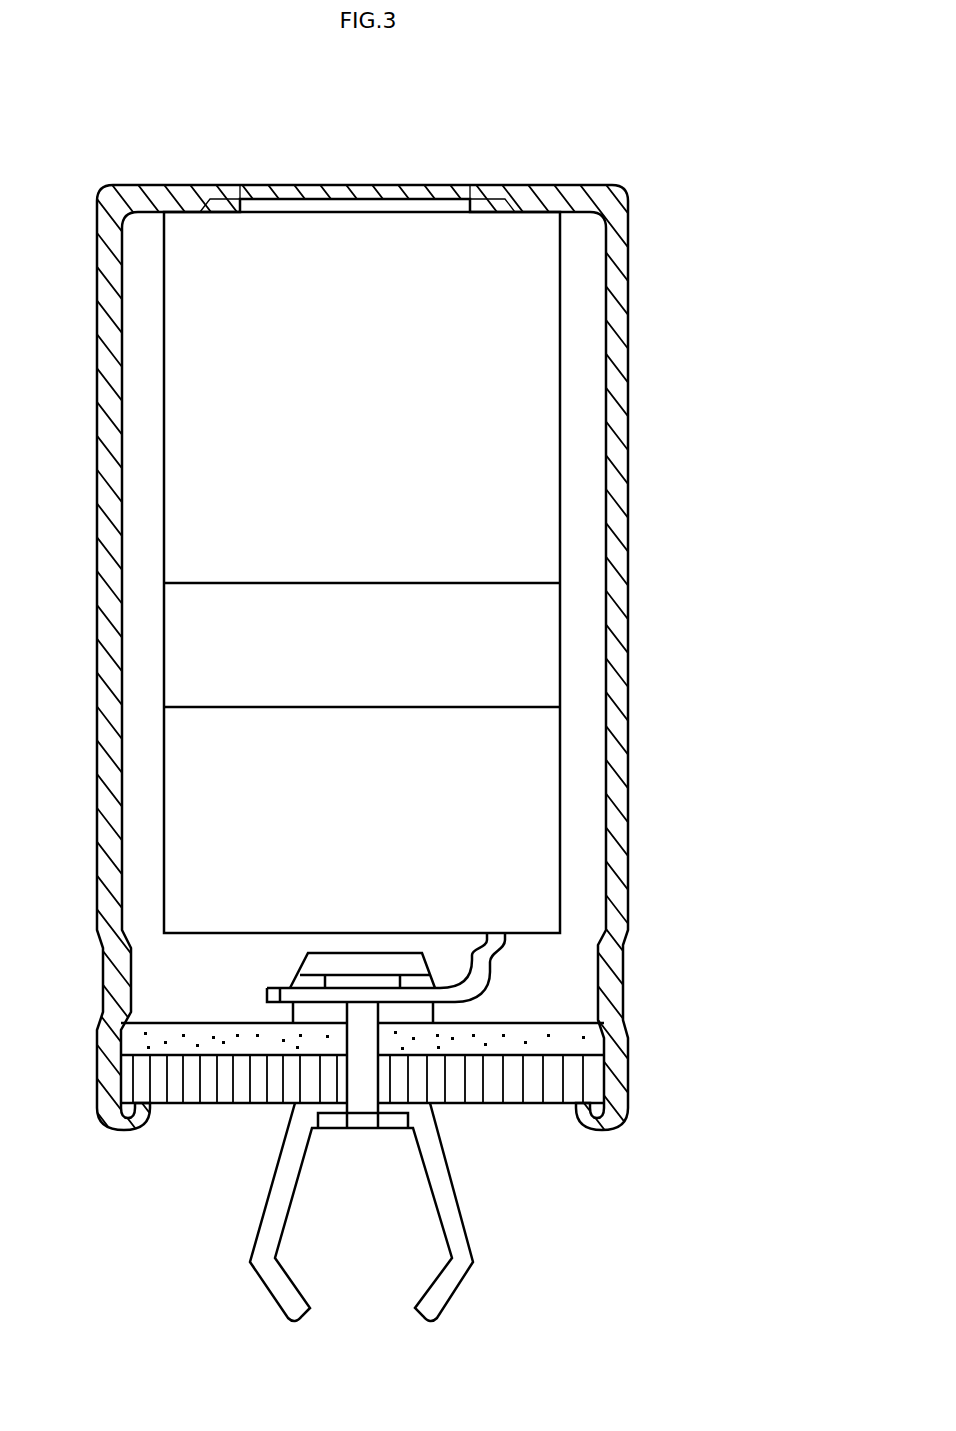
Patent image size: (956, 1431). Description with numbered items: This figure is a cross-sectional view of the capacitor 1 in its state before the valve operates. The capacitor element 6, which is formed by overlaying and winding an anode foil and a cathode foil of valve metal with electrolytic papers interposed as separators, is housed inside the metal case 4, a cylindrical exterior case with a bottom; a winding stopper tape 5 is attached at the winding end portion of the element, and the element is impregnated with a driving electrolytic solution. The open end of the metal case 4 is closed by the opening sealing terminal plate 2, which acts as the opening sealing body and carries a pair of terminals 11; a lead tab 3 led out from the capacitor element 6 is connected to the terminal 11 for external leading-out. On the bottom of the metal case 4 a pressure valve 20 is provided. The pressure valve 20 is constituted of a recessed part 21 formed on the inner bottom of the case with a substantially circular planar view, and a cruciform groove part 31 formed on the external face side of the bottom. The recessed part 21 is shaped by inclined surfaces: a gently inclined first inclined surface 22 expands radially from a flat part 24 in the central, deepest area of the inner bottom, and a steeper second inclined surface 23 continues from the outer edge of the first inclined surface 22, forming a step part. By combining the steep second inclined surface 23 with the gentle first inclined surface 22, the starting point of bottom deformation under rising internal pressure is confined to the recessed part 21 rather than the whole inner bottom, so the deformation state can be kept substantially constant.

The capacitor 1 is at (732, 172).
The opening sealing terminal plate 2 is at (223, 1086).
The lead tab 3 is at (483, 968).
The metal case 4 is at (618, 485).
The winding stopper tape 5 is at (503, 633).
The capacitor element 6 is at (437, 572).
The terminal 11 is at (478, 1240).
The pressure valve 20 is at (350, 220).
The recessed part 21 is at (336, 218).
The first inclined surface 22 is at (253, 200).
The second inclined surface 23 is at (207, 200).
The flat part 24 is at (367, 199).
The cruciform groove part 31 is at (302, 188).